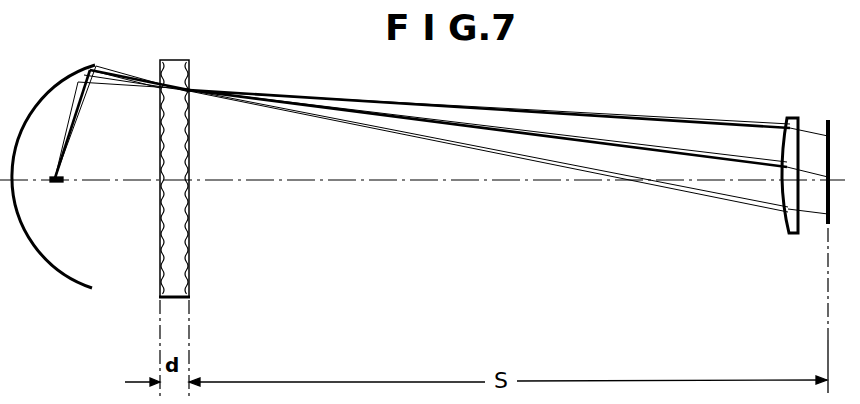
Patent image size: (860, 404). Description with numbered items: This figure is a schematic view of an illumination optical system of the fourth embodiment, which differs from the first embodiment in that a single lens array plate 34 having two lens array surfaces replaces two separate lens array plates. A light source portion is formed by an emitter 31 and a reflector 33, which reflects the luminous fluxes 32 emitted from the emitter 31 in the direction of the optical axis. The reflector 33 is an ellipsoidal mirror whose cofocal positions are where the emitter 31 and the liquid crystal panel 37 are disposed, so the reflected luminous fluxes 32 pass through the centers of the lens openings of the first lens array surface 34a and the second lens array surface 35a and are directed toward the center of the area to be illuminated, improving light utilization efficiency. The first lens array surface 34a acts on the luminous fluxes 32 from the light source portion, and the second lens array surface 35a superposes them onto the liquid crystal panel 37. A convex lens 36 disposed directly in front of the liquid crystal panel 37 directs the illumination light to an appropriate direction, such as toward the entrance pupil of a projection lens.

The emitter 31 is at (58, 184).
The luminous fluxes 32 is at (71, 138).
The reflector 33 is at (55, 97).
The lens array plate 34 is at (174, 200).
The first lens array surface 34a is at (158, 256).
The second lens array surface 35a is at (189, 259).
The convex lens 36 is at (784, 214).
The liquid crystal panel 37 is at (826, 203).